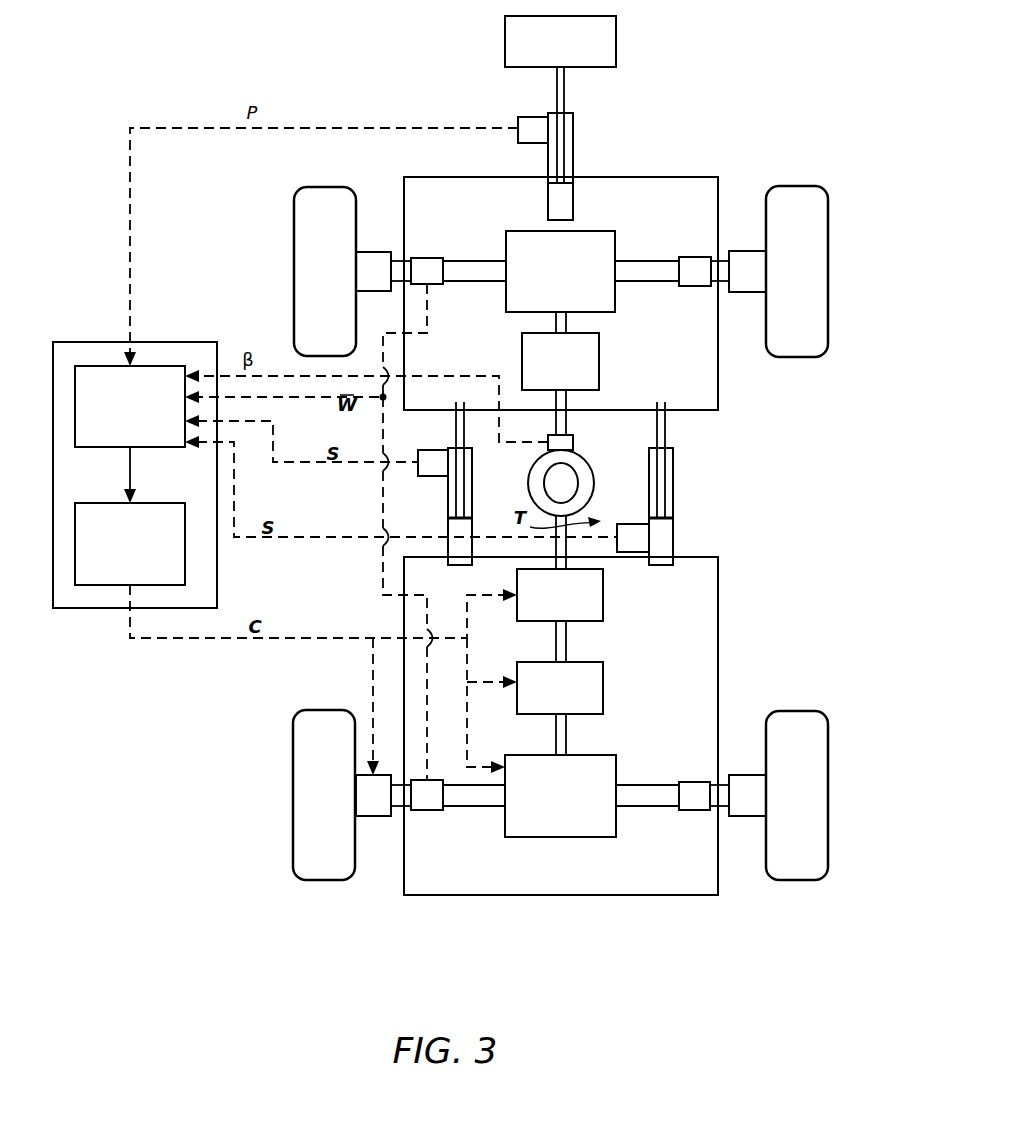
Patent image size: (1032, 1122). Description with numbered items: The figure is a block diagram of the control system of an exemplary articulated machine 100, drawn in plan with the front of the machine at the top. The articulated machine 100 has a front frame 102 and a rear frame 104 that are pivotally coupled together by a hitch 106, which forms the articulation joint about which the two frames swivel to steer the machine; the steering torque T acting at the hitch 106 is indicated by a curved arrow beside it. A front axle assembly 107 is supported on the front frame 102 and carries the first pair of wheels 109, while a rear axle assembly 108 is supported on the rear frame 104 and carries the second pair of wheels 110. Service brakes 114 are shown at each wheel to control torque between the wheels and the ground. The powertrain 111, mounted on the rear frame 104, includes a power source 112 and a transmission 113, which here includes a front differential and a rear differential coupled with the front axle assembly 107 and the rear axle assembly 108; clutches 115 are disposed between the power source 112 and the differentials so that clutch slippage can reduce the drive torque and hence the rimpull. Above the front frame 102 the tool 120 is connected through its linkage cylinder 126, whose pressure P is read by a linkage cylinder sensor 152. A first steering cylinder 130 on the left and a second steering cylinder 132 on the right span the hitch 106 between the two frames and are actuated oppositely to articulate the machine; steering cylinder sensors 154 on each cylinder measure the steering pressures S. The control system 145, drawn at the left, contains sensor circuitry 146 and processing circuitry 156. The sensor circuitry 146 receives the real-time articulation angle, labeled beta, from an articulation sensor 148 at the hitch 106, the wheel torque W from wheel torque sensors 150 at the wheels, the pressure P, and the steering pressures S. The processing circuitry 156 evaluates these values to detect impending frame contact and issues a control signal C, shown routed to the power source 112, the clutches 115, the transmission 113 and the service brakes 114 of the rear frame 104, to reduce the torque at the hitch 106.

The articulated machine 100 is at (768, 100).
The front frame 102 is at (718, 390).
The rear frame 104 is at (718, 643).
The hitch 106 is at (584, 483).
The front axle assembly 107 is at (645, 270).
The rear axle assembly 108 is at (648, 800).
The first pair of wheels 109 is at (302, 262).
The second pair of wheels 110 is at (303, 797).
The powertrain 111 is at (688, 695).
The power source 112 is at (560, 595).
The transmission 113 is at (560, 534).
The service brakes 114 is at (372, 252).
The clutch 115 is at (560, 523).
The tool 120 is at (560, 41).
The linkage cylinder 126 is at (566, 97).
The first steering cylinder 130 is at (448, 508).
The second steering cylinder 132 is at (674, 480).
The control system 145 is at (86, 342).
The sensor circuitry 146 is at (130, 406).
The articulation sensor 148 is at (574, 440).
The wheel torque sensors 150 is at (428, 258).
The linkage cylinder sensor 152 is at (528, 119).
The steering cylinder sensors 154 is at (438, 455).
The processing circuitry 156 is at (130, 544).